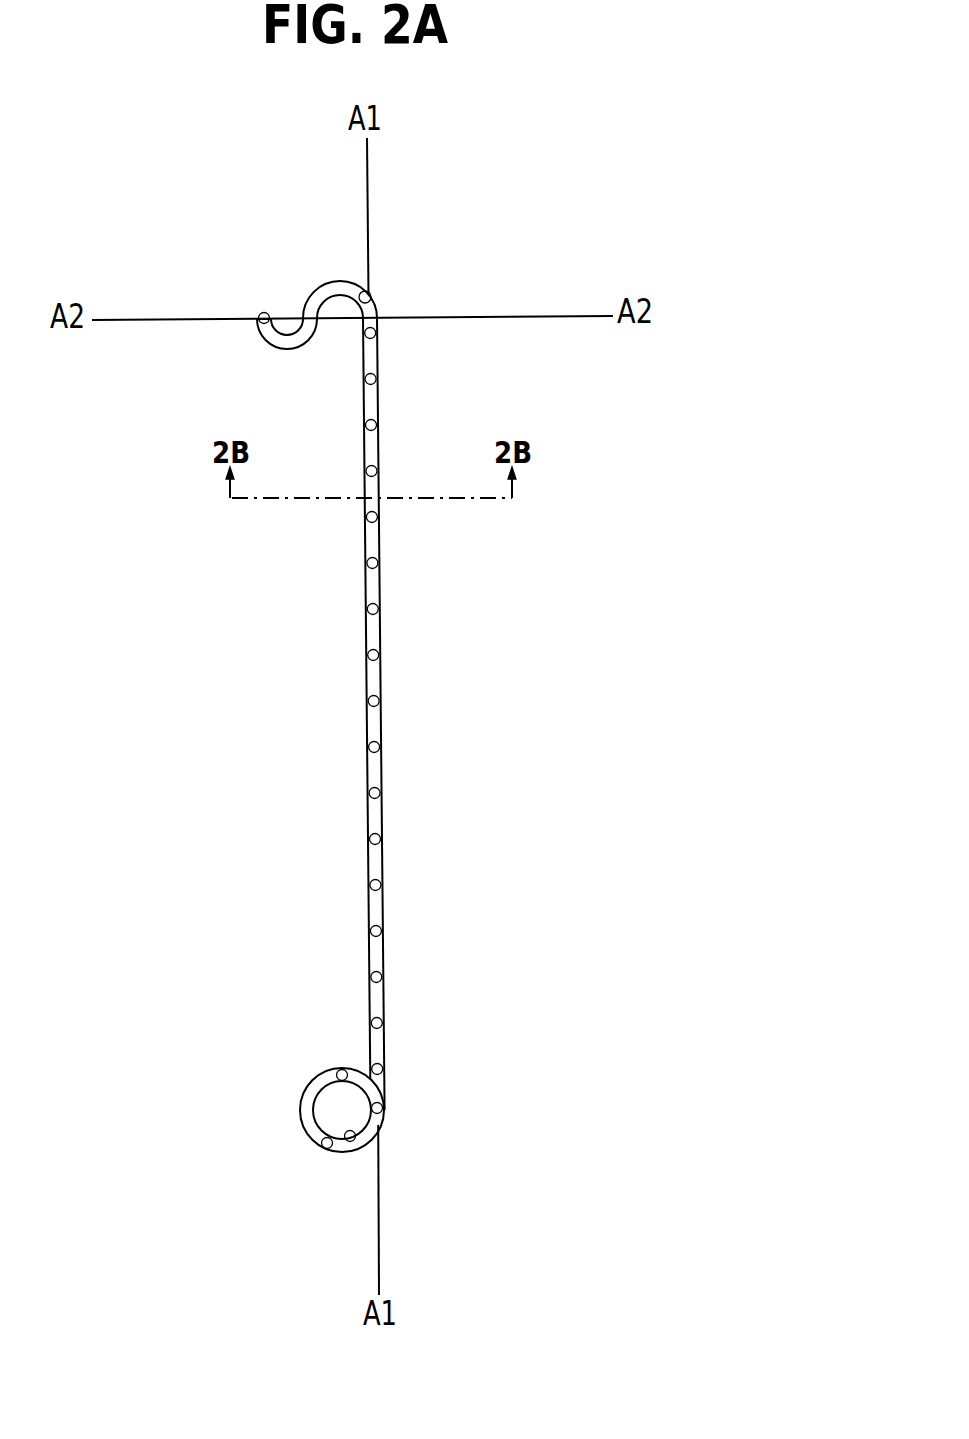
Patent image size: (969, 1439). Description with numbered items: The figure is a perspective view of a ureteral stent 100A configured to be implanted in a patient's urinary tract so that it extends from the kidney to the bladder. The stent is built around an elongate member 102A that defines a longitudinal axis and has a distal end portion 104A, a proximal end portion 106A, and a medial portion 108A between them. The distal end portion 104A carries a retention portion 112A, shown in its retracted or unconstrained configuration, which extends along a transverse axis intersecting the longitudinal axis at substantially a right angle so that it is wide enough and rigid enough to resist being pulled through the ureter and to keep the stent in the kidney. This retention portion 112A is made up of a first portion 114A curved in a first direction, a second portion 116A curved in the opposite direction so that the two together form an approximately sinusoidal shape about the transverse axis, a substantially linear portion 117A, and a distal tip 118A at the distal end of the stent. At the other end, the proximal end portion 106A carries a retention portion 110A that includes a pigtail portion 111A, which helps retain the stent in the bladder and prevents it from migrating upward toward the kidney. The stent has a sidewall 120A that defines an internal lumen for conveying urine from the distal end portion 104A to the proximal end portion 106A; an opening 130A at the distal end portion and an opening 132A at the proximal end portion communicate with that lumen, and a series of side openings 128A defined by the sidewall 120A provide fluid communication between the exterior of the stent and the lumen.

The ureteral stent 100A is at (312, 585).
The elongate member 102A is at (395, 595).
The distal end portion 104A is at (403, 298).
The proximal end portion 106A is at (409, 1088).
The medial portion 108A is at (313, 699).
The retention portion 110A is at (288, 1126).
The pigtail portion 111A is at (302, 1100).
The retention portion 112A is at (391, 288).
The first portion 114A is at (335, 281).
The second portion 116A is at (287, 352).
The substantially linear portion 117A is at (377, 331).
The distal tip 118A is at (261, 312).
The sidewall 120A is at (381, 715).
The side openings 128A is at (381, 930).
The opening 130A is at (266, 312).
The opening 132A is at (350, 1142).